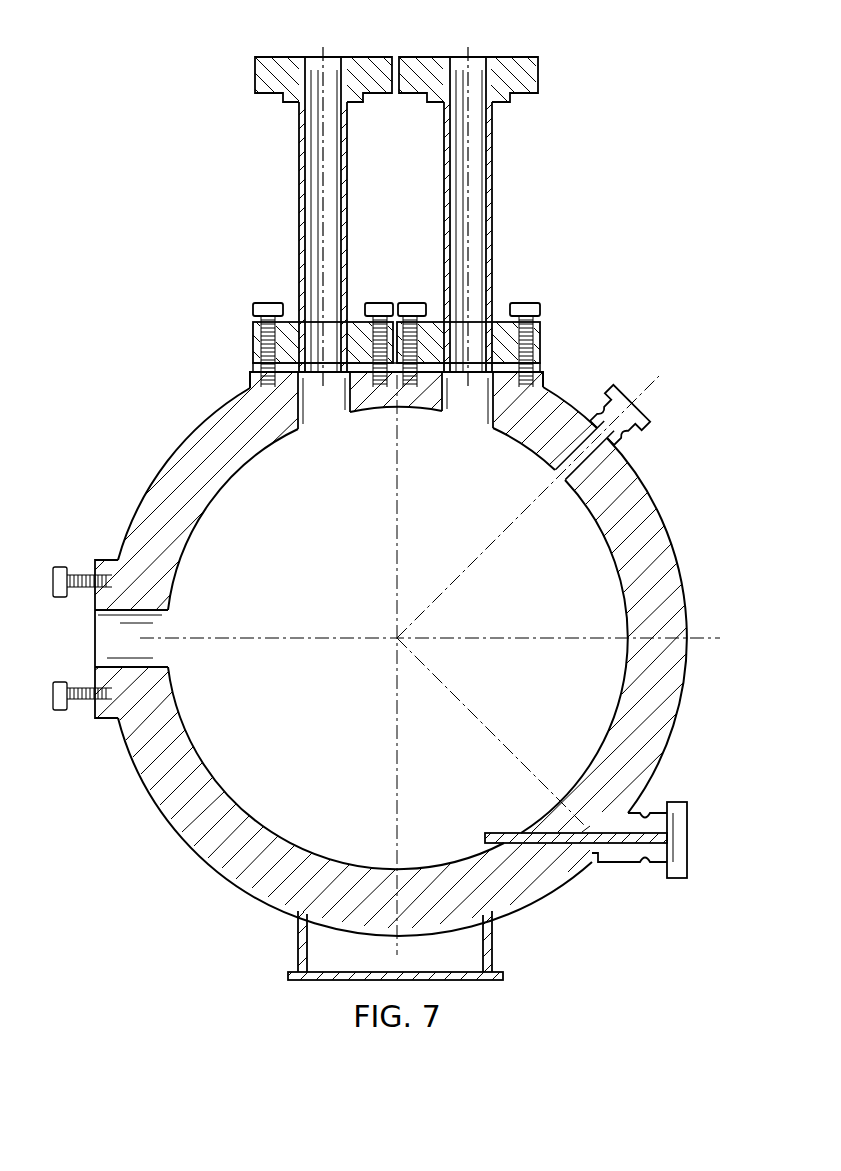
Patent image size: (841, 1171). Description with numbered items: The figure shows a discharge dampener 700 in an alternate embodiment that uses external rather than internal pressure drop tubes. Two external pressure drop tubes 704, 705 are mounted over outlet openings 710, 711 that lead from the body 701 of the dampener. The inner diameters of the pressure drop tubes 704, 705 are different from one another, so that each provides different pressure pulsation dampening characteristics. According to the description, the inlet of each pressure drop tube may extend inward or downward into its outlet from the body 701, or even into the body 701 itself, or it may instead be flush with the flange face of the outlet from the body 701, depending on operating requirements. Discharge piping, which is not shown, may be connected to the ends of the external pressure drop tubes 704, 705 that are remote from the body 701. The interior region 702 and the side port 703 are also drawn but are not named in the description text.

The discharge dampener 700 is at (136, 166).
The body 701 is at (160, 470).
The chamber interior 702 is at (331, 722).
The side port 703 is at (104, 630).
The external pressure drop tube 704 is at (298, 213).
The external pressure drop tube 705 is at (495, 196).
The outlet opening 710 is at (318, 384).
The outlet opening 711 is at (478, 384).